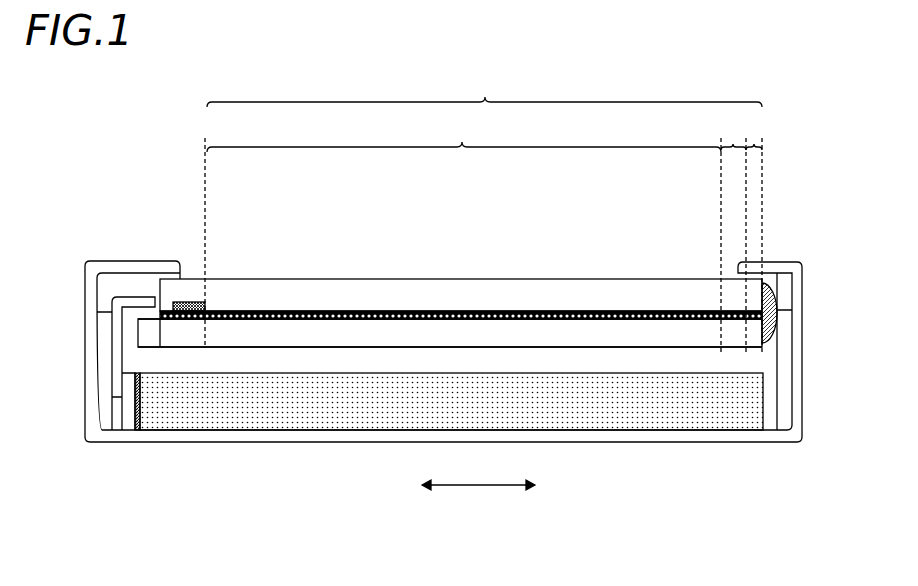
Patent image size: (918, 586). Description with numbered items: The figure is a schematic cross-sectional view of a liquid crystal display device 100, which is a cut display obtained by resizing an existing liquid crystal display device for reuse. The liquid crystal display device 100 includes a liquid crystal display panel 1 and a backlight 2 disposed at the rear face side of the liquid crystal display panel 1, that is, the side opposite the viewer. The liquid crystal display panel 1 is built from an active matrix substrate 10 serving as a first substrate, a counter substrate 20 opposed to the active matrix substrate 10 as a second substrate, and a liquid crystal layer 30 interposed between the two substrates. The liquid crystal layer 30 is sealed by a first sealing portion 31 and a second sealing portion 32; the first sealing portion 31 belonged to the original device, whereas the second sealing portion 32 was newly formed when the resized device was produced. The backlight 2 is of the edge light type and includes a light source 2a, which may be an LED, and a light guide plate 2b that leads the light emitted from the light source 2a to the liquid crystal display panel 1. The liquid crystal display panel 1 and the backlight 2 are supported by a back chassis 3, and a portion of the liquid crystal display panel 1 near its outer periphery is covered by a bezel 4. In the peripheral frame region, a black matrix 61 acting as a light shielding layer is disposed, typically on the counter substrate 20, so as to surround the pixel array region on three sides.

The liquid crystal display panel 1 is at (410, 222).
The backlight 2 is at (200, 512).
The light source 2a is at (132, 428).
The light guide plate 2b is at (188, 430).
The back chassis 3 is at (363, 435).
The bezel 4 is at (123, 270).
The active matrix substrate 10 is at (330, 335).
The counter substrate 20 is at (405, 298).
The liquid crystal layer 30 is at (367, 312).
The first sealing portion 31 is at (175, 322).
The second sealing portion 32 is at (767, 262).
The black matrix 61 is at (190, 300).
The liquid crystal display device 100 is at (827, 242).